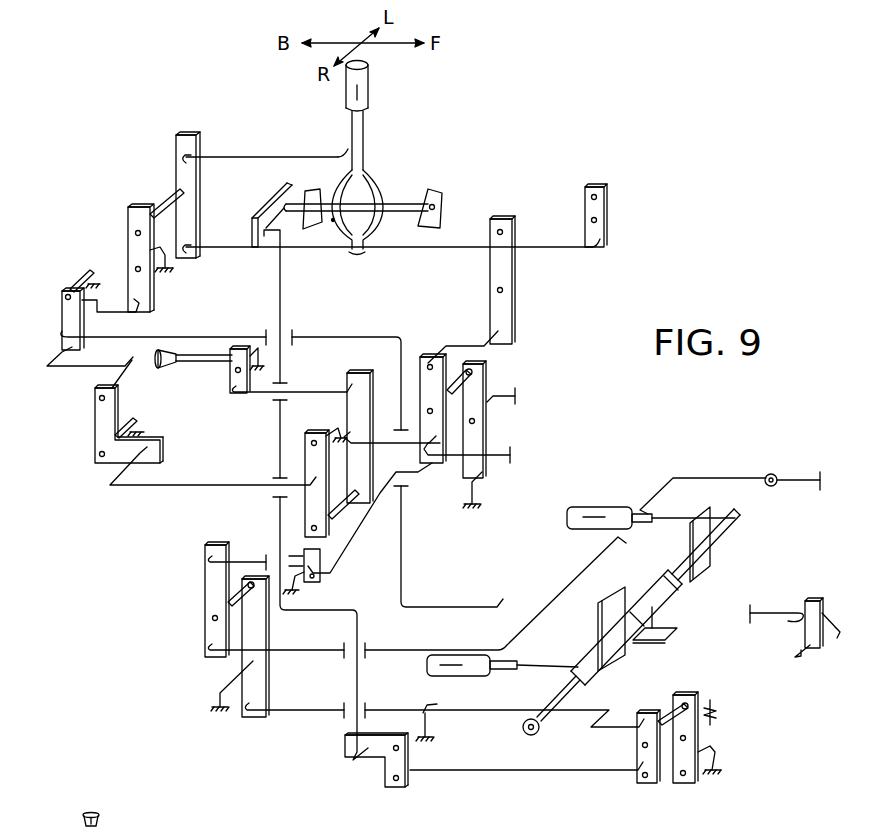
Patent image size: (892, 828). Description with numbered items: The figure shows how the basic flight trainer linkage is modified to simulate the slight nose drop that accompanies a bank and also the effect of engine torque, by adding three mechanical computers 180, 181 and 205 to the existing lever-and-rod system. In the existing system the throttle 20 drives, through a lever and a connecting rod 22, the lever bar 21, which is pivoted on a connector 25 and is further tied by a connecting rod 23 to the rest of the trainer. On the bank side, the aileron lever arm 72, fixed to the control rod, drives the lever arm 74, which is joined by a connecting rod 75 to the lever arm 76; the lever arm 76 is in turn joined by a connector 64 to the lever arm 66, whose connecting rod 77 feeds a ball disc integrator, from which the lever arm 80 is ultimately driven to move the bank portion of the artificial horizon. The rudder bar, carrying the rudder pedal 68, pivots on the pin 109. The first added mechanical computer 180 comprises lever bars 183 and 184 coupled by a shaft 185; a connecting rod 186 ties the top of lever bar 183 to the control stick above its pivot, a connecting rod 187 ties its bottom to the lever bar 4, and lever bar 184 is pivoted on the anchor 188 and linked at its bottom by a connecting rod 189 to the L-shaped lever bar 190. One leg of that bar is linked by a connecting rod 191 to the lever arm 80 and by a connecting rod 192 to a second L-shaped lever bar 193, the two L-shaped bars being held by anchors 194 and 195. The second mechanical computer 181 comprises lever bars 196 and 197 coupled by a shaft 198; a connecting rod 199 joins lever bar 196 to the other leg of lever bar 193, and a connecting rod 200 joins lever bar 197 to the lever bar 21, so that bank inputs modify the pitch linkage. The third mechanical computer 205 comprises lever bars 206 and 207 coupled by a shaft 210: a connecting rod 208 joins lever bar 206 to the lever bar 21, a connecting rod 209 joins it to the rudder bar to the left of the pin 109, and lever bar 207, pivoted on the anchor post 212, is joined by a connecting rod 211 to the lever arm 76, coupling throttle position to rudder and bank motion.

The lever bar 4 is at (606, 237).
The throttle 20 is at (193, 373).
The lever bar 21 is at (424, 354).
The connecting rod 22 is at (252, 400).
The connecting rod 23 is at (498, 339).
The connector 25 is at (488, 379).
The connector 64 is at (667, 714).
The lever arm 66 is at (696, 693).
The rudder pedal 68 is at (598, 613).
The aileron lever arm 72 is at (252, 226).
The lever arm 74 is at (383, 757).
The connecting rod 75 is at (538, 771).
The lever arm 76 is at (637, 754).
The connecting rod 77 is at (718, 713).
The lever arm 80 is at (811, 598).
The pin 109 is at (661, 630).
The mechanical computer 180 is at (159, 188).
The mechanical computer 181 is at (300, 456).
The lever bar 183 is at (190, 133).
The lever bar 184 is at (128, 221).
The shaft 185 is at (187, 204).
The connecting rod 186 is at (286, 158).
The connecting rod 187 is at (311, 252).
The anchor 188 is at (165, 268).
The connecting rod 189 is at (112, 316).
The L-shaped lever bar 190 is at (62, 303).
The connecting rod 191 is at (243, 339).
The connecting rod 192 is at (64, 377).
The L-shaped lever bar 193 is at (95, 418).
The anchor 194 is at (88, 277).
The anchor 195 is at (139, 426).
The lever bar 196 is at (318, 433).
The lever bar 197 is at (345, 376).
The shaft 198 is at (341, 510).
The connecting rod 199 is at (162, 494).
The connecting rod 200 is at (420, 450).
The mechanical computer 205 is at (192, 586).
The lever bar 206 is at (205, 626).
The lever bar 207 is at (268, 683).
The connecting rod 208 is at (250, 560).
The connecting rod 209 is at (433, 655).
The shaft 210 is at (252, 591).
The connecting rod 211 is at (310, 720).
The anchor post 212 is at (218, 689).